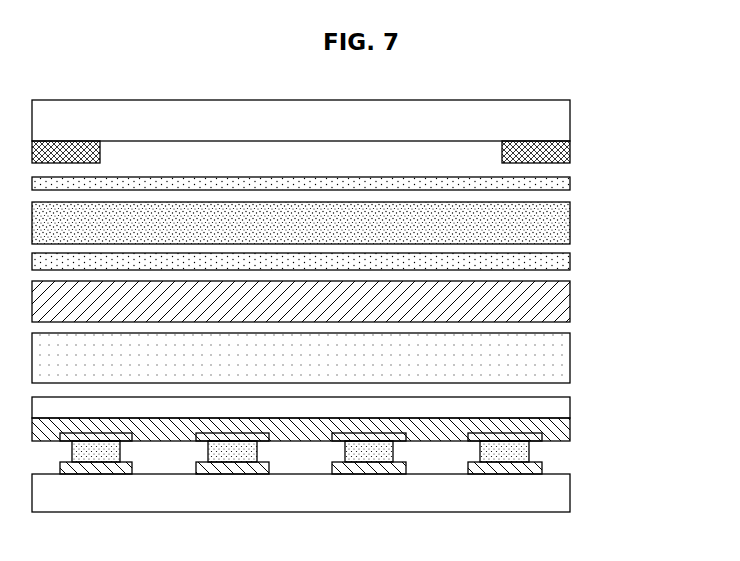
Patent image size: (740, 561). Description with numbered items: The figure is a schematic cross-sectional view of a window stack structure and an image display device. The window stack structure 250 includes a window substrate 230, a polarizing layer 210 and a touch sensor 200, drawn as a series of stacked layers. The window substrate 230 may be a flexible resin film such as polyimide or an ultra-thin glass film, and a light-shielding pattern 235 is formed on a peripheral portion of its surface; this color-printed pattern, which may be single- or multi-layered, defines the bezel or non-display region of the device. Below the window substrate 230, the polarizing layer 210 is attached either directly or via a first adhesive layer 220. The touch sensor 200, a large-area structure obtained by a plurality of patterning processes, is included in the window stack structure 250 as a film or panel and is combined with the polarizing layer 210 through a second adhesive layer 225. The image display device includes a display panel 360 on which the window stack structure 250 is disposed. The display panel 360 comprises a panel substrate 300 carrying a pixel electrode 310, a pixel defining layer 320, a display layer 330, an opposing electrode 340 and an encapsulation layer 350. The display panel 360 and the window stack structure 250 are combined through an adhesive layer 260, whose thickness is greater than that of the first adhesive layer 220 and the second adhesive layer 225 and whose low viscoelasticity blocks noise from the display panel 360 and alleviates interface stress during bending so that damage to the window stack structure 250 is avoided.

The touch sensor 200 is at (335, 301).
The polarizing layer 210 is at (571, 221).
The first adhesive layer 220 is at (571, 183).
The second adhesive layer 225 is at (571, 262).
The window substrate 230 is at (571, 122).
The light-shielding pattern 235 is at (571, 152).
The window stack structure 250 is at (360, 211).
The adhesive layer 260 is at (571, 356).
The panel substrate 300 is at (567, 495).
The pixel electrode 310 is at (349, 470).
The pixel defining layer 320 is at (567, 450).
The display layer 330 is at (572, 423).
The opposing electrode 340 is at (563, 407).
The encapsulation layer 350 is at (575, 405).
The display panel 360 is at (360, 445).